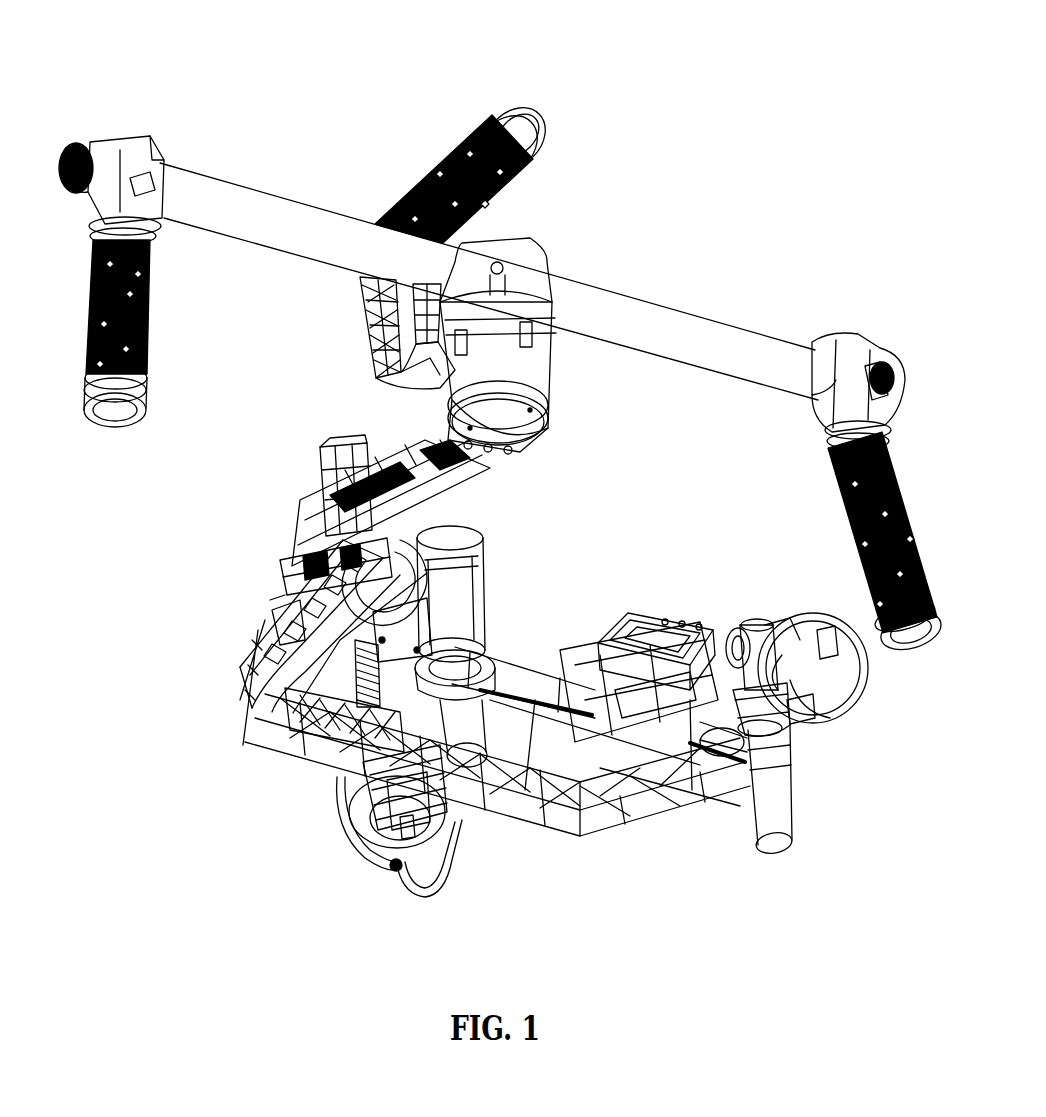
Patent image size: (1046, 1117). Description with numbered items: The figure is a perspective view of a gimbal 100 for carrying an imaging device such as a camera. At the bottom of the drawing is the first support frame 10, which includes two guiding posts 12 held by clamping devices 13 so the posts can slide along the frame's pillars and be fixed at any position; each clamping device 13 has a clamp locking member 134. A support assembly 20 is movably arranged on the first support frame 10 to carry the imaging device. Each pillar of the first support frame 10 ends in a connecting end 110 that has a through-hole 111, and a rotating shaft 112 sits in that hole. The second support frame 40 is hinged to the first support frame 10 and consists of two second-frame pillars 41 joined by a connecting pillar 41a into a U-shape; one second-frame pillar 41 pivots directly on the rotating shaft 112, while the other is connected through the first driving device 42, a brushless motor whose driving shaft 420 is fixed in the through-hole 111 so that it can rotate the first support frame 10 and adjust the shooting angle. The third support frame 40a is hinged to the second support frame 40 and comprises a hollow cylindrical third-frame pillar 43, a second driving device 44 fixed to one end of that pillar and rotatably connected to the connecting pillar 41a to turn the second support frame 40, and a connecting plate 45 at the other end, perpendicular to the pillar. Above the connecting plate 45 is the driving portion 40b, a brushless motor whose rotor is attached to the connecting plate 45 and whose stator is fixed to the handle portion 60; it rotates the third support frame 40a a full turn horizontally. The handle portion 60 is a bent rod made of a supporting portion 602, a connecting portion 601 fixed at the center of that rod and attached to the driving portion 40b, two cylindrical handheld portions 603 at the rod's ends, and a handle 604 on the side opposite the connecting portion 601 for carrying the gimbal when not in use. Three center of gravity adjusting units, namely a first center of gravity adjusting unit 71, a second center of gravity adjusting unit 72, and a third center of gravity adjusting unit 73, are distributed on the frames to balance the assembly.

The gimbal 100 is at (470, 32).
The handle portion 60 is at (676, 203).
The connecting portion 601 is at (392, 360).
The supporting portion 602 is at (638, 292).
The handheld portions 603 is at (148, 292).
The handle 604 is at (540, 118).
The driving portion 40b is at (497, 368).
The third center of gravity adjusting unit 73 is at (440, 476).
The rotating shaft 112 is at (435, 542).
The connecting plate 45 is at (292, 530).
The third-frame pillar 43 is at (456, 608).
The first center of gravity adjusting unit 71 is at (490, 652).
The support assembly 20 is at (658, 577).
The through-hole 111 is at (731, 630).
The connecting end 110 is at (757, 630).
The second support frame 40 is at (186, 712).
The second-frame pillars 41 is at (246, 690).
The connecting pillar 41a is at (357, 768).
The clamp locking member 134 is at (356, 765).
The third support frame 40a is at (348, 862).
The second driving device 44 is at (380, 820).
The guiding posts 12 is at (523, 800).
The second center of gravity adjusting unit 72 is at (571, 792).
The first driving device 42 is at (835, 682).
The driving shaft 420 is at (785, 660).
The clamping devices 13 is at (792, 752).
The first support frame 10 is at (822, 878).